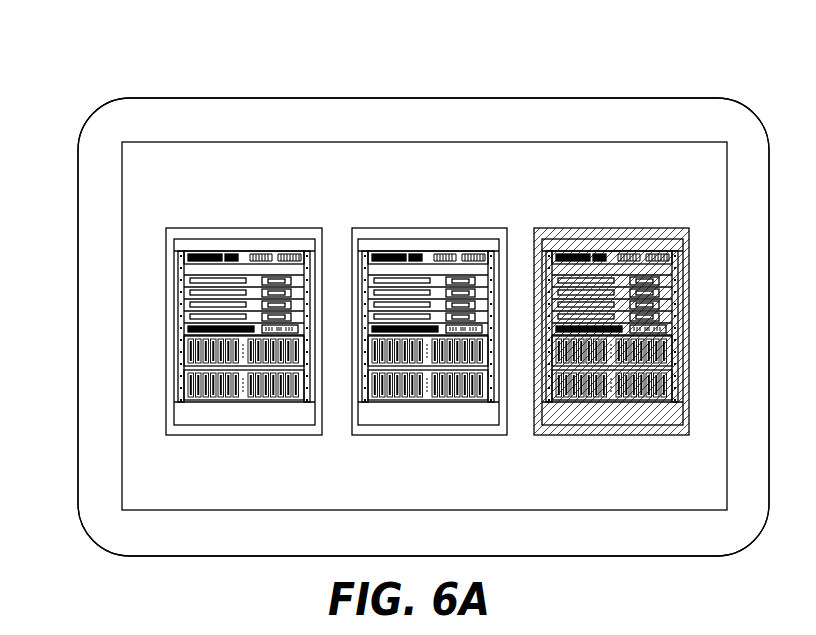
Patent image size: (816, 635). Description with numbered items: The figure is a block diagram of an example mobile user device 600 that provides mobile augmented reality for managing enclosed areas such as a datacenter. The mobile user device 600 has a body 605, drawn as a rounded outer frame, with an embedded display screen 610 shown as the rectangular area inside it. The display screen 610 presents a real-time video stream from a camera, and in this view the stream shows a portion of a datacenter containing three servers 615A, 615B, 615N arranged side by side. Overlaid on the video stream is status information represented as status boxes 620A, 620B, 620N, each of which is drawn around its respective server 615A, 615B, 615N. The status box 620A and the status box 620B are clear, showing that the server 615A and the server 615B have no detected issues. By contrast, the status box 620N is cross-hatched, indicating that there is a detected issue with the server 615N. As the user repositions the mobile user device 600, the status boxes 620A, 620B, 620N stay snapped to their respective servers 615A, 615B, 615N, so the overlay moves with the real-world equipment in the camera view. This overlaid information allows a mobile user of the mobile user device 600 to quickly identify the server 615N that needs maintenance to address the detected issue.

The mobile user device 600 is at (86, 55).
The body 605 is at (180, 97).
The display screen 610 is at (265, 141).
The server 615A is at (219, 239).
The status box 620A is at (245, 228).
The server 615B is at (403, 239).
The status box 620B is at (431, 228).
The server 615N is at (588, 239).
The status box 620N is at (617, 228).